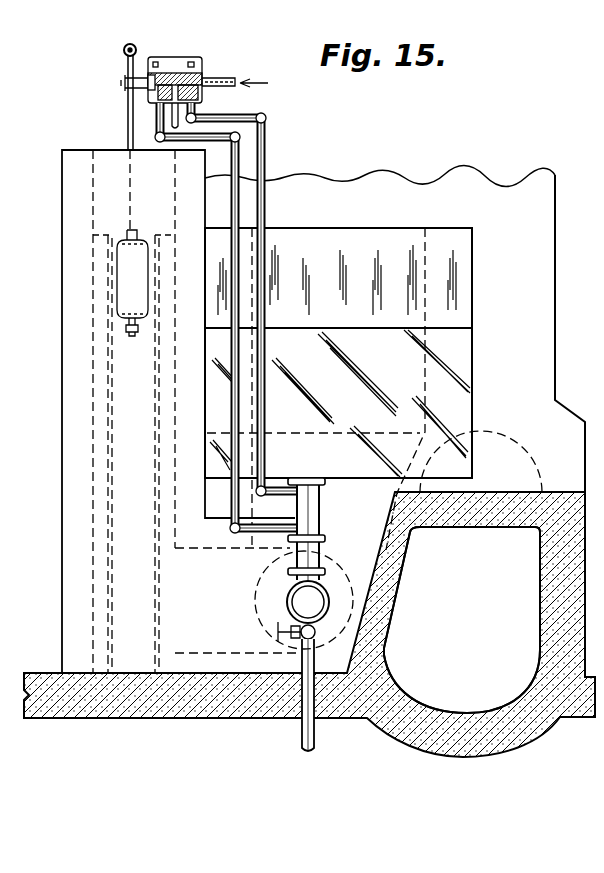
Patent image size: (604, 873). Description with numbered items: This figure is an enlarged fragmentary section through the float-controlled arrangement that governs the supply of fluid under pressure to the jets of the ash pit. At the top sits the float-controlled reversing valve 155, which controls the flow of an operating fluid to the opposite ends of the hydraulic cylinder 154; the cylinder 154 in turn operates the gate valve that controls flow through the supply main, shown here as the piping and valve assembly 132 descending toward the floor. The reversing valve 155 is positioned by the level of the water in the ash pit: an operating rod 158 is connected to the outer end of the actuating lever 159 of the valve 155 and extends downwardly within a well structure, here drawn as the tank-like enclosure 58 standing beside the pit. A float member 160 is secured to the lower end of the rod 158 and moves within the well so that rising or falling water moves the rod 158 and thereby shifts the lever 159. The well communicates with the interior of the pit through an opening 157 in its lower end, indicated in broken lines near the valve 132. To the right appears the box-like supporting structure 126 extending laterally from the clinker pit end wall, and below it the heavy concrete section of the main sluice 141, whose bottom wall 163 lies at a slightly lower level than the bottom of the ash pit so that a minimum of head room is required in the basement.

The tank 58 is at (70, 158).
The box-like supporting structure 126 is at (472, 254).
The valve 132 is at (287, 602).
The main sluice 141 is at (410, 677).
The hydraulic cylinder 154 is at (307, 478).
The float-controlled reversing valve 155 is at (182, 74).
The opening 157 is at (337, 558).
The operating rod 158 is at (127, 127).
The actuating lever 159 is at (124, 50).
The float member 160 is at (110, 233).
The bottom wall 163 is at (458, 713).